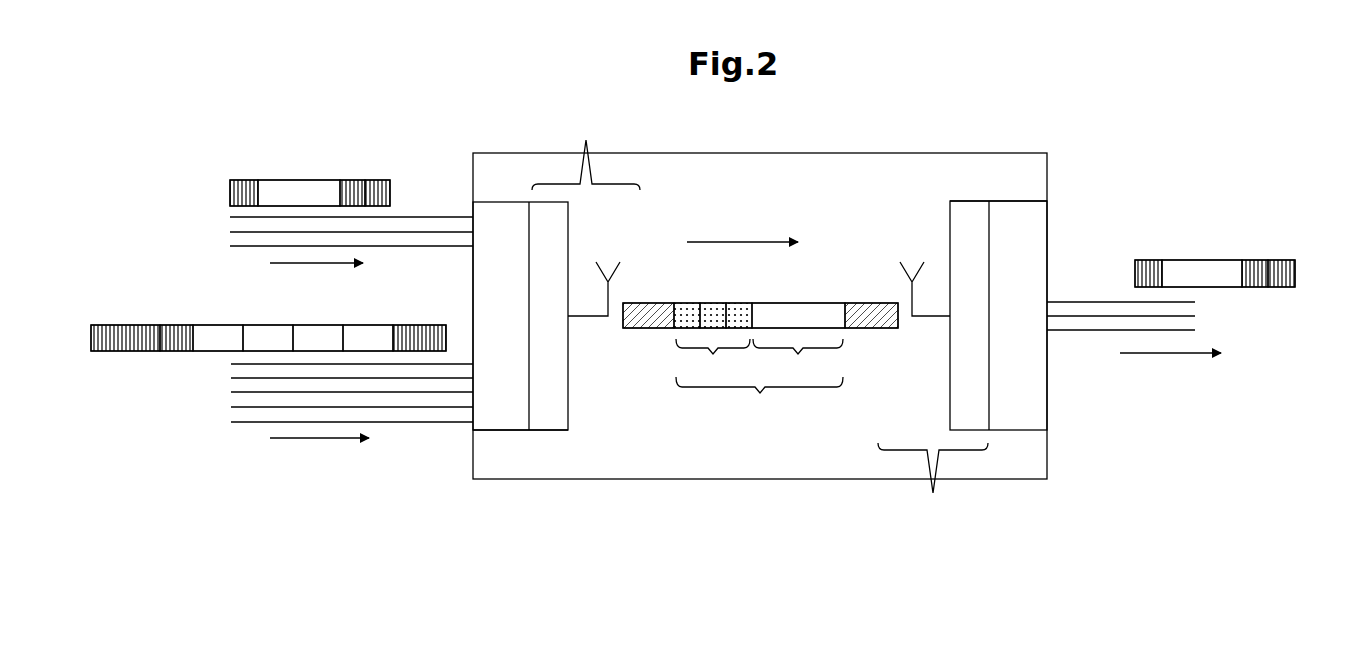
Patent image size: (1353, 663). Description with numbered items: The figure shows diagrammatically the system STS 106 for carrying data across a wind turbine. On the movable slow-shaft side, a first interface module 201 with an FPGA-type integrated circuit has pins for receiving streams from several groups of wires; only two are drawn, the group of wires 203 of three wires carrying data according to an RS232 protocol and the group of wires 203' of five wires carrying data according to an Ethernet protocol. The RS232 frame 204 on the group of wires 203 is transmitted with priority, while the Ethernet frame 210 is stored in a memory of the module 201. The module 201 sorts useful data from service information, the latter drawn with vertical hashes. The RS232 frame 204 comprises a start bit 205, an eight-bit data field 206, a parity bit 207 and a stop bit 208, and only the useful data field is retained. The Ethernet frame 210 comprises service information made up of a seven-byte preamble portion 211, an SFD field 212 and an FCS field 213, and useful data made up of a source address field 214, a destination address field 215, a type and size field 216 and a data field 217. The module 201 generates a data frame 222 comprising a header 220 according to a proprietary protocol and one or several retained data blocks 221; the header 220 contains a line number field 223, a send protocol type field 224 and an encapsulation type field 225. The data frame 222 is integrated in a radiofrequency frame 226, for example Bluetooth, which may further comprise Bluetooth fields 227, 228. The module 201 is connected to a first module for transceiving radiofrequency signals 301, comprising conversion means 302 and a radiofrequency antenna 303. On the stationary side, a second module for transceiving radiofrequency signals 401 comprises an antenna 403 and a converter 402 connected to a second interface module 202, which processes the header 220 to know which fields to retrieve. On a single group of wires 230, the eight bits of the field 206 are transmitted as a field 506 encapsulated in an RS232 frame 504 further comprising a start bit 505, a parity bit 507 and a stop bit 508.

The STS system 106 is at (900, 153).
The first interface module 201 is at (508, 200).
The second interface module 202 is at (1020, 200).
The group of wires 203 is at (351, 198).
The group of wires 203' is at (352, 438).
The RS232 frame 204 is at (259, 152).
The start bit 205 is at (243, 180).
The data field 206 is at (290, 187).
The parity bit 207 is at (352, 185).
The stop bit 208 is at (385, 183).
The Ethernet frame 210 is at (263, 339).
The preamble portion 211 is at (103, 351).
The SFD field 212 is at (165, 352).
The FCS field 213 is at (422, 333).
The source address field 214 is at (215, 330).
The destination address field 215 is at (255, 332).
The type and size field 216 is at (333, 335).
The data field 217 is at (378, 335).
The header 220 is at (737, 320).
The retained data blocks 221 is at (798, 344).
The data frame 222 is at (764, 319).
The line number field 223 is at (697, 302).
The send protocol type field 224 is at (708, 302).
The encapsulation type field 225 is at (742, 302).
The radiofrequency frame 226 is at (836, 262).
The Bluetooth field 227 is at (665, 302).
The Bluetooth field 228 is at (868, 302).
The group of wires 230 is at (1079, 282).
The first module for transceiving radiofrequency signals 301 is at (586, 150).
The digital-to-analogue and analogue-to-digital conversion means 302 is at (547, 432).
The radiofrequency antenna 303 is at (588, 318).
The second module for transceiving radiofrequency signals 401 is at (933, 485).
The analogue-to-digital and digital-to-analogue converter 402 is at (970, 200).
The antenna 403 is at (920, 318).
The RS232 frame 504 is at (1240, 269).
The start bit 505 is at (1148, 260).
The data field 506 is at (1190, 260).
The parity bit 507 is at (1255, 260).
The stop bit 508 is at (1290, 260).